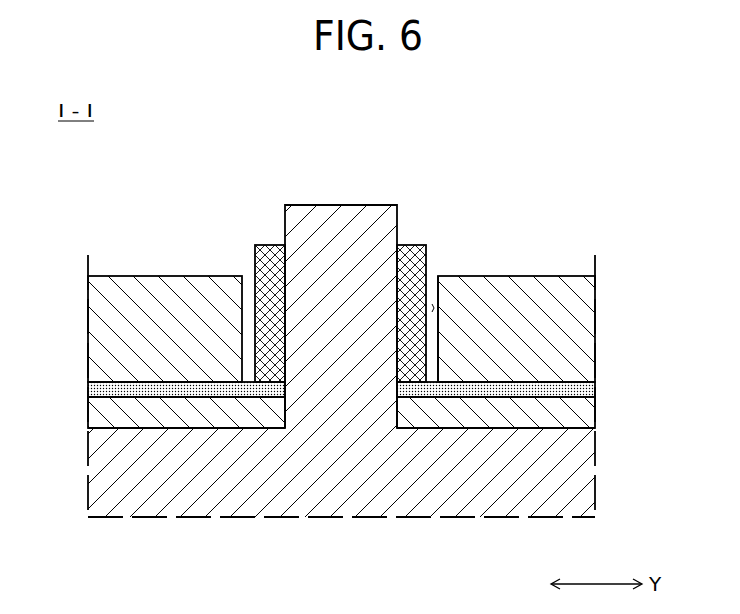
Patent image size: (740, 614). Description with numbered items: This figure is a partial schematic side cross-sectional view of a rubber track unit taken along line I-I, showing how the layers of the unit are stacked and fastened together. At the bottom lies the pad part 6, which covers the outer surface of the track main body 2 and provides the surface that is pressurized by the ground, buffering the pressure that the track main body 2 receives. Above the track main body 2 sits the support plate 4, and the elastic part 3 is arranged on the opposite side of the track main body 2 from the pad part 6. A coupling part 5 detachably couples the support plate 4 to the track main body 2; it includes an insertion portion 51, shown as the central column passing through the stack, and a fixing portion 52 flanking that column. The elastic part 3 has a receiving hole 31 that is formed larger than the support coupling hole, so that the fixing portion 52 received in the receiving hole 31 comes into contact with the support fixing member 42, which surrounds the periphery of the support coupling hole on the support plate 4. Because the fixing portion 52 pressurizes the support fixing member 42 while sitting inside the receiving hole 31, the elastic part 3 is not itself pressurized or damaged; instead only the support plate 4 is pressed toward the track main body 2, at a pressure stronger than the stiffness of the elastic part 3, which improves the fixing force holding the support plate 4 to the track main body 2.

The track main body 2 is at (580, 415).
The elastic part 3 is at (527, 337).
The support plate 4 is at (370, 483).
The coupling part 5 is at (340, 264).
The pad part 6 is at (528, 468).
The receiving hole 31 is at (437, 311).
The support fixing member 42 is at (410, 390).
The insertion portion 51 is at (334, 216).
The fixing portion 52 is at (410, 272).